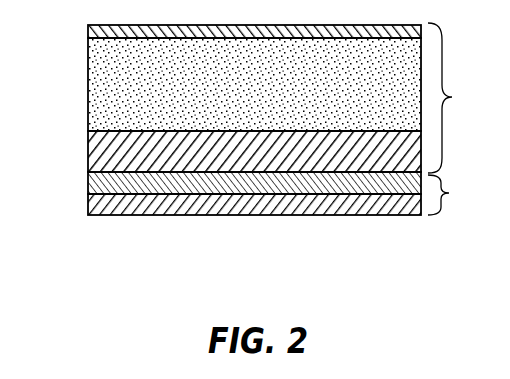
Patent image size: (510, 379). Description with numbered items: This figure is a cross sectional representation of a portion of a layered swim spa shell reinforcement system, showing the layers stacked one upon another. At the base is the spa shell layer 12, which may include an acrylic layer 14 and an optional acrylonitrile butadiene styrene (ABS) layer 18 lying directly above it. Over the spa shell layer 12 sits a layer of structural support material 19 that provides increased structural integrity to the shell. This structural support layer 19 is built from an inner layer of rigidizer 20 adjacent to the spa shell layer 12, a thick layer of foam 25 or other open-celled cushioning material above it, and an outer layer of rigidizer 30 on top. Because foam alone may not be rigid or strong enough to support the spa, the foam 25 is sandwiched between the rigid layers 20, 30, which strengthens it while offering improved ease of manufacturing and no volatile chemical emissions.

The spa shell layer 12 is at (456, 195).
The acrylic layer 14 is at (92, 206).
The acrylonitrile butadiene styrene (ABS) layer 18 is at (92, 181).
The layer of structural support material 19 is at (457, 98).
The inner layer of rigidizer 20 is at (100, 150).
The layer of foam 25 is at (107, 85).
The outer layer of rigidizer 30 is at (88, 30).